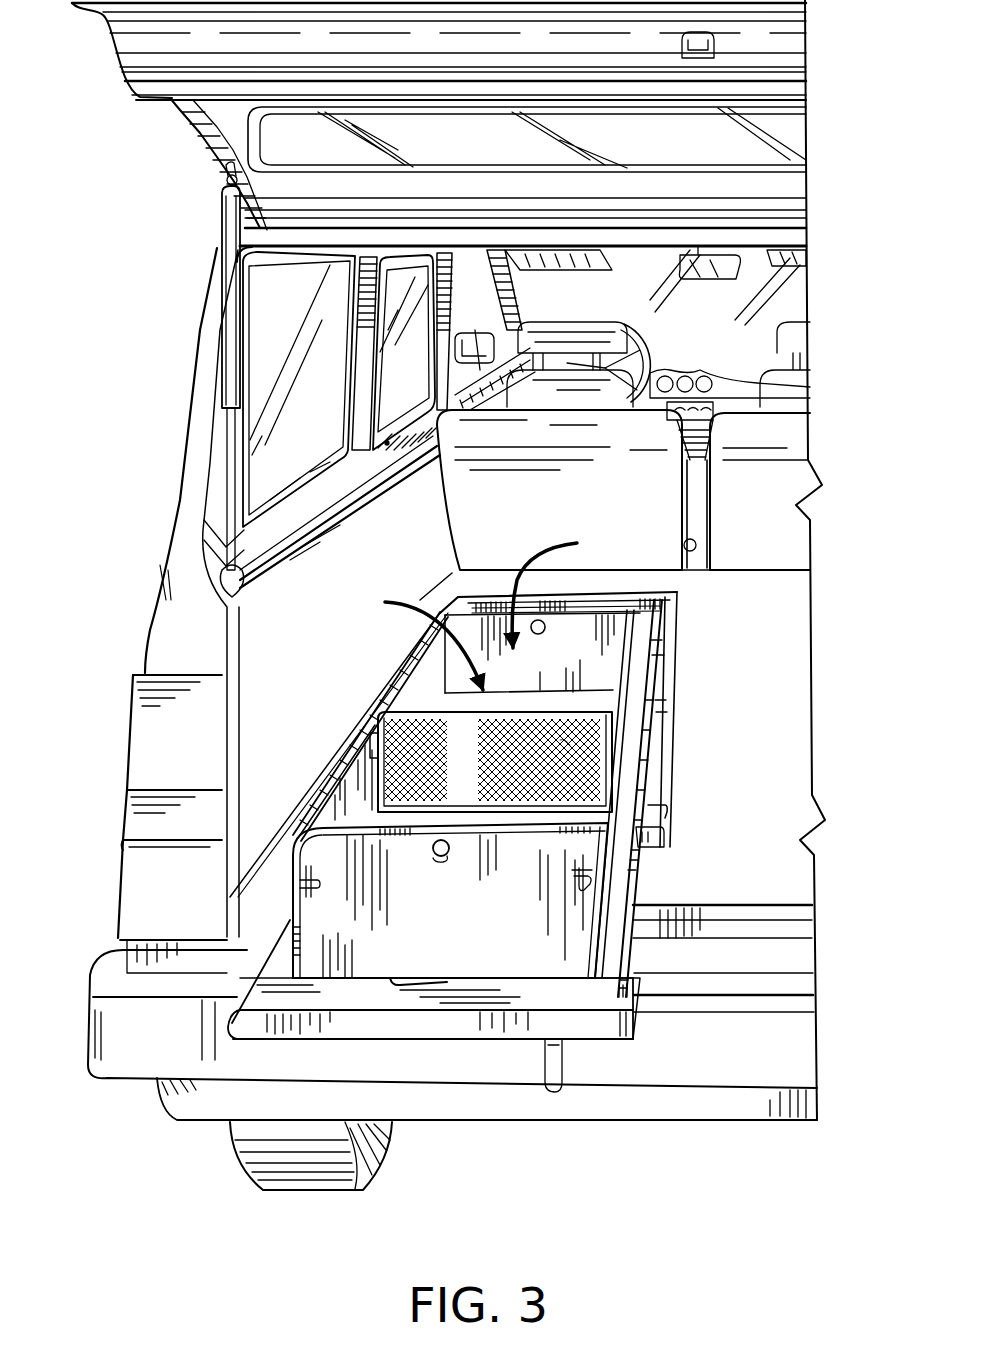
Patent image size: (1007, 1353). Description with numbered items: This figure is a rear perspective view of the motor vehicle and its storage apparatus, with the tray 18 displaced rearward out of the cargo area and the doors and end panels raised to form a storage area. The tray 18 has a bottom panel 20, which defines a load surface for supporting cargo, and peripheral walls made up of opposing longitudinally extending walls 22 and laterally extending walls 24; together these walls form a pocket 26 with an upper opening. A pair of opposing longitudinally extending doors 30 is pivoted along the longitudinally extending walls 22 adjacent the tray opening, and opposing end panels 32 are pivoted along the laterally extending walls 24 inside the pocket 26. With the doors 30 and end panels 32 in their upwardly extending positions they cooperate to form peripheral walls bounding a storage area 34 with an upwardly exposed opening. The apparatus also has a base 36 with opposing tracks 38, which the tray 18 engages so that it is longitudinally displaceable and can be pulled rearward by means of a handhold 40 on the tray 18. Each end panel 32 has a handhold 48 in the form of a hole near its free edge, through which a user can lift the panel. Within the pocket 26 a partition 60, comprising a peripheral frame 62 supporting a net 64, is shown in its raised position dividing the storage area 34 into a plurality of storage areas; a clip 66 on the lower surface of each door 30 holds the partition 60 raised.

The tray 18 is at (487, 1027).
The bottom panel 20 is at (540, 700).
The longitudinally extending walls 22 is at (268, 968).
The laterally extending walls 24 is at (633, 1013).
The pocket 26 is at (566, 584).
The longitudinally extending doors 30 is at (300, 808).
The end panels 32 is at (580, 622).
The storage area 34 is at (545, 790).
The base 36 is at (650, 832).
The tracks 38 is at (643, 890).
The handhold 40 is at (420, 947).
The handhold 48 is at (546, 624).
The partition 60 is at (408, 636).
The peripheral frame 62 is at (373, 783).
The net 64 is at (613, 727).
The clip 66 is at (375, 782).